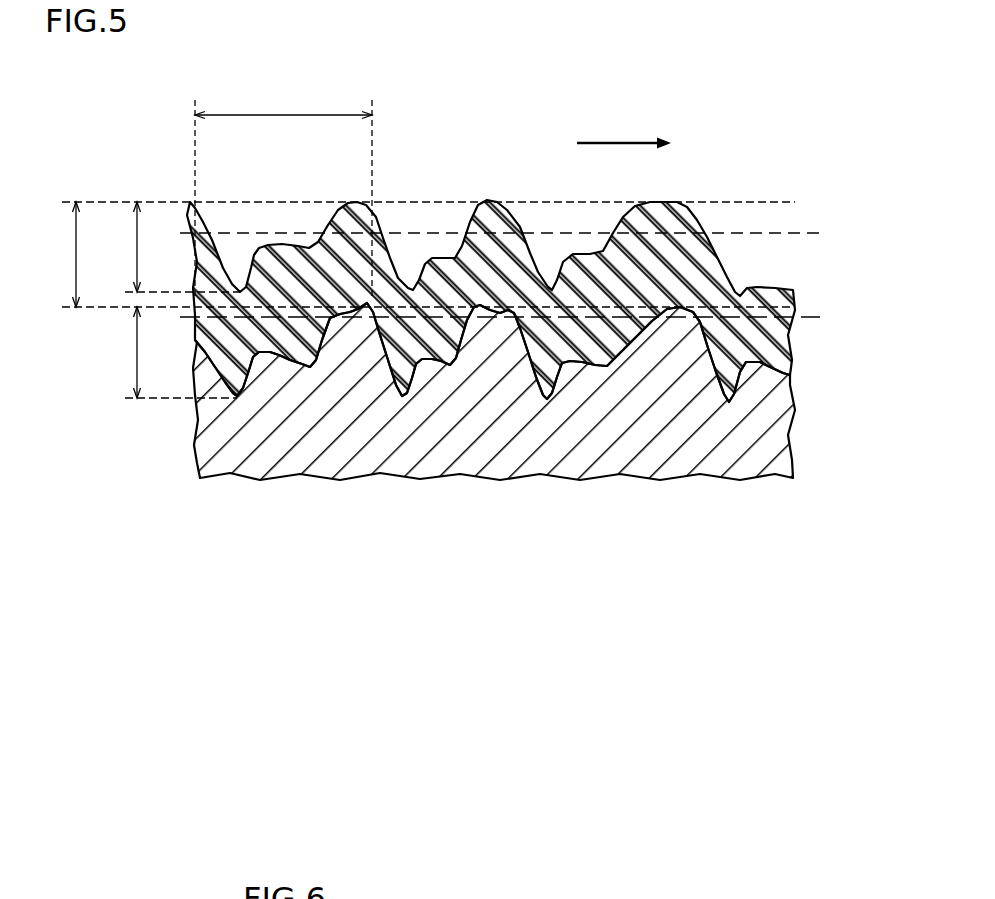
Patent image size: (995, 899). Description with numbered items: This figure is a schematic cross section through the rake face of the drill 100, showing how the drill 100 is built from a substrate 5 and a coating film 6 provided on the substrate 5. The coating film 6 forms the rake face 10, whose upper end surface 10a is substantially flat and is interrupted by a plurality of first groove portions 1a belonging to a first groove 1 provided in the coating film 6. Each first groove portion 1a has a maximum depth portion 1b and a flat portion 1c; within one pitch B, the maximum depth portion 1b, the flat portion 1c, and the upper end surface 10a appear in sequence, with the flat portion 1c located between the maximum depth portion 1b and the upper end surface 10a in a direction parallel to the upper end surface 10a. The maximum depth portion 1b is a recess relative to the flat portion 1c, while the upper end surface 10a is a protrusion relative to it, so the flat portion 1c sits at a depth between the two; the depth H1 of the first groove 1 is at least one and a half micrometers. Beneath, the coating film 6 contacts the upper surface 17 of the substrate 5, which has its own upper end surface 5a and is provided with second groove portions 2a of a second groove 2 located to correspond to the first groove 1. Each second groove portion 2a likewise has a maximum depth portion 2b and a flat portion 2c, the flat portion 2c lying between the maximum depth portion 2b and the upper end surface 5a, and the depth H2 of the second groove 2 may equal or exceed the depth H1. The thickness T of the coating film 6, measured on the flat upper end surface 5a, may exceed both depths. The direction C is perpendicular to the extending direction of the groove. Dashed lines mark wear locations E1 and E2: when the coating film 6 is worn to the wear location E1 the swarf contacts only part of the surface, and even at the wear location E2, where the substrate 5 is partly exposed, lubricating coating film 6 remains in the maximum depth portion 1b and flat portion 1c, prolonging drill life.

The drill 100 is at (713, 187).
The rake face 10 is at (280, 42).
The upper end surface 10a is at (357, 200).
The first groove 1 is at (118, 76).
The first groove portion 1a is at (103, 111).
The maximum depth portion 1b is at (240, 292).
The flat portion 1c is at (275, 245).
The coating film 6 is at (707, 253).
The substrate 5 is at (604, 432).
The upper end surface 5a is at (355, 312).
The second groove 2 is at (437, 560).
The second groove portion 2a is at (223, 527).
The maximum depth portion 2b is at (240, 397).
The flat portion 2c is at (279, 358).
The upper surface 17 is at (327, 592).
The pitch B is at (283, 192).
The direction C is at (611, 143).
The thickness T is at (426, 254).
The depth H1 is at (171, 247).
The depth H2 is at (169, 352).
The wear location E1 is at (516, 236).
The wear location E2 is at (516, 320).